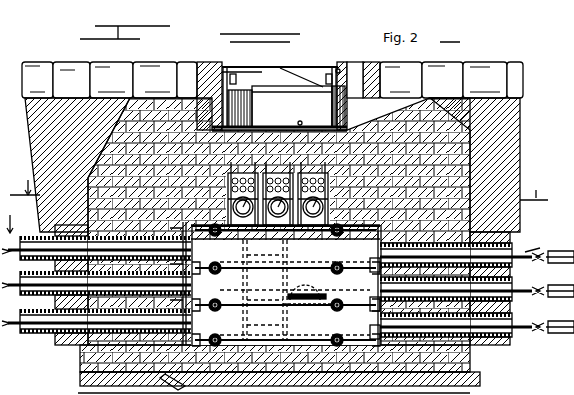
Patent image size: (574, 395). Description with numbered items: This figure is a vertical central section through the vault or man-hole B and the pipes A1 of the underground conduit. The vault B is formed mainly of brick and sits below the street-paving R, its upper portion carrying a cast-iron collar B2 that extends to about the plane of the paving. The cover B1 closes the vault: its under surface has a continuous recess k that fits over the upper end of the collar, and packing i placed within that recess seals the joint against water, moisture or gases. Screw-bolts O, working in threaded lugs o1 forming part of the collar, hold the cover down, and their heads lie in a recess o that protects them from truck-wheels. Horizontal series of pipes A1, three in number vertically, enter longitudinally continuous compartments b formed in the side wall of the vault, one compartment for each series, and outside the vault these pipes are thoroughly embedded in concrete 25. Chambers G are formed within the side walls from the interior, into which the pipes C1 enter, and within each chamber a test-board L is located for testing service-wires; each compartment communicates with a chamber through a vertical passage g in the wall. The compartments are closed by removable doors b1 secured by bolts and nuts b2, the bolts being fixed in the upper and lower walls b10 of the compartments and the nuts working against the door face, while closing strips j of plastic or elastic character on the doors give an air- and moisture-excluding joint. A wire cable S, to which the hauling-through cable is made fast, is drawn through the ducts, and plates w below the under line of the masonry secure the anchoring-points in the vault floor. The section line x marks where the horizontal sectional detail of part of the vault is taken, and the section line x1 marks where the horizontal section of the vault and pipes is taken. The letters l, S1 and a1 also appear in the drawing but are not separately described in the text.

The pavement blocks R is at (272, 80).
The earth filling 25 is at (500, 356).
The manhole masonry walls k is at (185, 66).
The brick conduit chamber B is at (275, 217).
The manhole cover B1 is at (290, 68).
The manhole sleeve lining B2 is at (286, 106).
The manhole cylinder O is at (292, 106).
The cover hinge o is at (340, 68).
The cover lugs o1 is at (281, 79).
The cylinder bottom opening j is at (295, 116).
The manhole inner lining i is at (222, 72).
The junction boxes L is at (330, 176).
The junction box terminals l is at (315, 178).
The cable dials C1 is at (352, 190).
The upper tie bolts G is at (343, 226).
The tie rods b is at (246, 283).
The tie rod bolts b1 is at (290, 293).
The partition frames b2 is at (279, 278).
The wall anchors b10 is at (166, 292).
The gauge g is at (312, 280).
The wall brackets S is at (379, 292).
The lower wall bracket S1 is at (383, 335).
The conduit pipes A1 is at (519, 318).
The section line x is at (284, 194).
The section line x1 is at (277, 235).
The pipe ends a1 is at (6, 292).
The chamber floor drain w is at (275, 383).